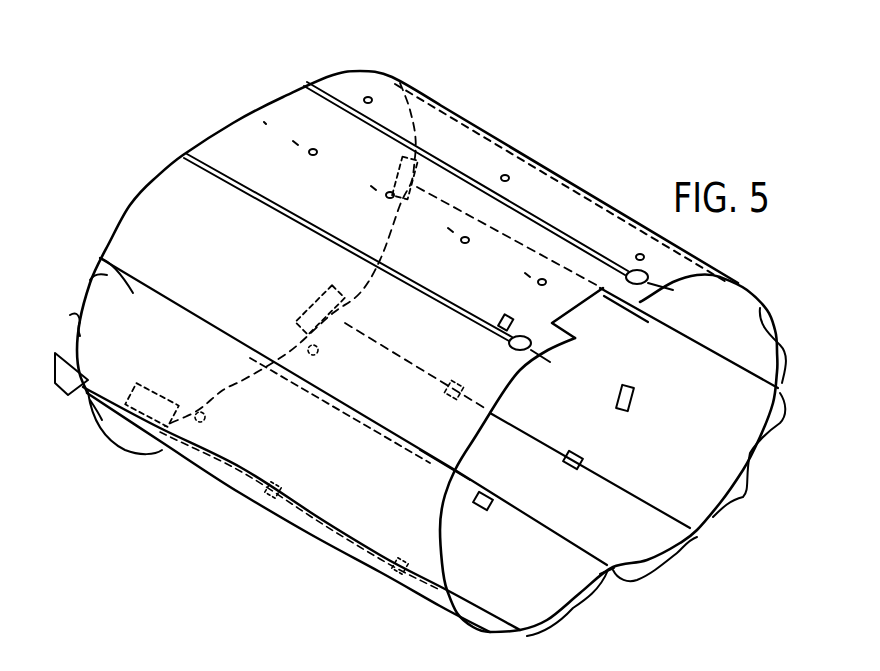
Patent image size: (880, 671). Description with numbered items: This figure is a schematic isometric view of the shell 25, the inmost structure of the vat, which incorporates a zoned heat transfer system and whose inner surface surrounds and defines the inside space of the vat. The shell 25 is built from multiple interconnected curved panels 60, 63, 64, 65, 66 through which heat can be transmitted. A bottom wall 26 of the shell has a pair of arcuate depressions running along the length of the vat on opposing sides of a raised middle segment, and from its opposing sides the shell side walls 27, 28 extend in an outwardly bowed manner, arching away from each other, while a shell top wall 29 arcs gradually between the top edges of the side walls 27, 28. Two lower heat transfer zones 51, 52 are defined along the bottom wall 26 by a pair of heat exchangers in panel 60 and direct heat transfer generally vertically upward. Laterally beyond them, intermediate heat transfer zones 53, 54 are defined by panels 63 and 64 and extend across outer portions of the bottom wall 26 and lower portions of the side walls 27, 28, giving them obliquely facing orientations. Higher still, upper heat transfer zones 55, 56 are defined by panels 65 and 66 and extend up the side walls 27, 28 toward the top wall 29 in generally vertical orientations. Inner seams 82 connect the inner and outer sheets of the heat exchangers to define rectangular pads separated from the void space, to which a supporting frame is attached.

The shell 25 is at (430, 347).
The bottom wall 26 is at (611, 573).
The shell side wall 27 is at (86, 276).
The shell side wall 28 is at (773, 323).
The shell top wall 29 is at (291, 98).
The lower heat transfer zone 51 is at (567, 612).
The lower heat transfer zone 52 is at (656, 565).
The intermediate heat transfer zone 53 is at (94, 426).
The intermediate heat transfer zone 54 is at (745, 500).
The upper heat transfer zone 55 is at (70, 315).
The upper heat transfer zone 56 is at (793, 370).
The panel 60 is at (573, 518).
The panel 63 is at (193, 457).
The panel 64 is at (700, 410).
The panel 65 is at (107, 247).
The panel 66 is at (730, 325).
The inner seam 82 is at (48, 388).